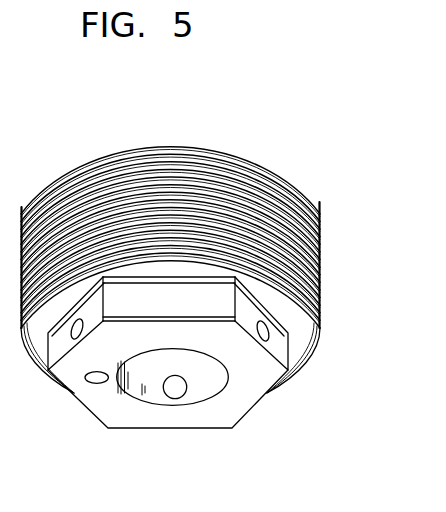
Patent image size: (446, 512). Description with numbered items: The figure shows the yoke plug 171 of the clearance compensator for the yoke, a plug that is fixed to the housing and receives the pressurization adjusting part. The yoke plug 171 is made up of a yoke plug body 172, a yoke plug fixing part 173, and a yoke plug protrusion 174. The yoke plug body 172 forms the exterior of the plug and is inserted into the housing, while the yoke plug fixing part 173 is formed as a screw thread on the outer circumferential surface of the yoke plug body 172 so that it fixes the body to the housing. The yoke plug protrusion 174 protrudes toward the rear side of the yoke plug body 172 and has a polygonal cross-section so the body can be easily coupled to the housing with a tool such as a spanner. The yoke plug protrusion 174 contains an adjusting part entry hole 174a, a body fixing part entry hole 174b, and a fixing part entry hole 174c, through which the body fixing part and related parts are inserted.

The yoke plug 171 is at (380, 97).
The yoke plug body 172 is at (292, 317).
The yoke plug fixing part 173 is at (300, 245).
The yoke plug protrusion 174 is at (211, 402).
The adjusting part entry hole 174a is at (198, 378).
The body fixing part entry hole 174b is at (262, 337).
The fixing part entry hole 174c is at (92, 383).